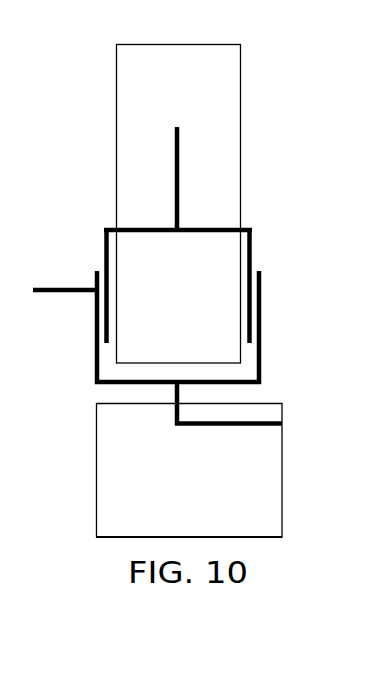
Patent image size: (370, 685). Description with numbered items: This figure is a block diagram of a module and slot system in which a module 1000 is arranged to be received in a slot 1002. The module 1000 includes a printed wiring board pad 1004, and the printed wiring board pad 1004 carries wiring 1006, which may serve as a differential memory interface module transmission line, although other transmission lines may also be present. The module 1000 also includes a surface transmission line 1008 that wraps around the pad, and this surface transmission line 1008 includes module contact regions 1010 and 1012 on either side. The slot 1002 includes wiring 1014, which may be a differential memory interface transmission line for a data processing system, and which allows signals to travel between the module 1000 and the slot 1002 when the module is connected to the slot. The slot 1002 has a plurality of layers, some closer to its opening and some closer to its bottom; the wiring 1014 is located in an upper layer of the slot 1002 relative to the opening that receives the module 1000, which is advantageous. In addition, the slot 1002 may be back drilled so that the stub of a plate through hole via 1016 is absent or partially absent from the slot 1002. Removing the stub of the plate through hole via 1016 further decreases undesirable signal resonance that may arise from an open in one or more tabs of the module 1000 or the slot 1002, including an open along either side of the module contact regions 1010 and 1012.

The module 1000 is at (110, 71).
The slot 1002 is at (88, 481).
The printed wiring board pad 1004 is at (102, 249).
The wiring 1006 is at (175, 147).
The surface transmission line 1008 is at (173, 390).
The module contact region 1010 is at (94, 284).
The module contact region 1012 is at (262, 320).
The wiring 1014 is at (228, 425).
The plate through hole via 1016 is at (177, 412).